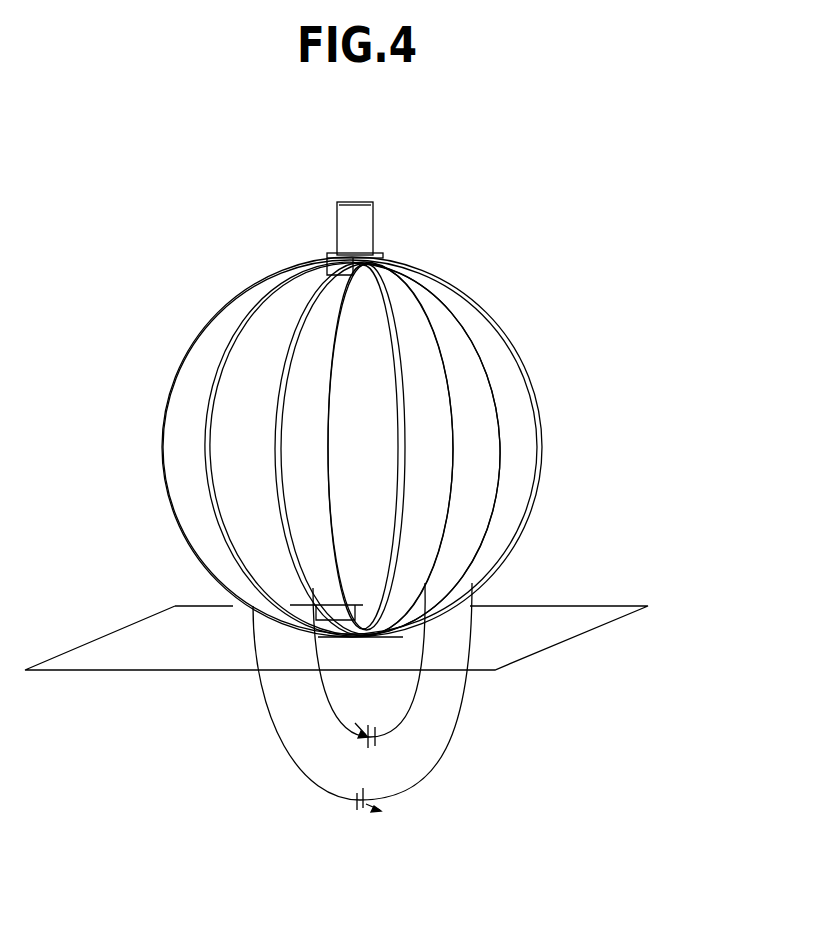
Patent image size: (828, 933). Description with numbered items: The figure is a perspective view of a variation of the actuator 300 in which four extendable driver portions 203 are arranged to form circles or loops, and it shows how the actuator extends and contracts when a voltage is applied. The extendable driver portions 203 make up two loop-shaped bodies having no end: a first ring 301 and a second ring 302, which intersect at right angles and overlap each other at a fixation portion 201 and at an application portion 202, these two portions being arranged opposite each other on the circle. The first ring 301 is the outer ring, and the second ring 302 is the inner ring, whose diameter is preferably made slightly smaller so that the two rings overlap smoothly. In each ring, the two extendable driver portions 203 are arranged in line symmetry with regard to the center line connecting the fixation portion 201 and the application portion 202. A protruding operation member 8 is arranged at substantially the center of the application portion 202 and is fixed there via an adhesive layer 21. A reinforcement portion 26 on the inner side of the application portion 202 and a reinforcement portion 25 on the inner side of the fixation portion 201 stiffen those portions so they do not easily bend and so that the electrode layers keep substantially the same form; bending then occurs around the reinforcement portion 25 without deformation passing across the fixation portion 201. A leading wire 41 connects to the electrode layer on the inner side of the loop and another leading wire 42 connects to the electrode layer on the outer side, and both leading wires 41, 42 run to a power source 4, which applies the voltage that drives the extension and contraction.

The actuator 300 is at (499, 231).
The first ring 301 is at (550, 492).
The second ring 302 is at (261, 416).
The extendable driver portion 203 is at (187, 327).
The application portion 202 is at (340, 220).
The operation member 8 is at (374, 217).
The adhesive layer 21 is at (379, 256).
The reinforcement portion 26 is at (343, 276).
The reinforcement portion 25 is at (339, 619).
The fixation portion 201 is at (365, 652).
The leading wire 41 is at (318, 688).
The leading wire 42 is at (272, 732).
The power source 4 is at (352, 745).